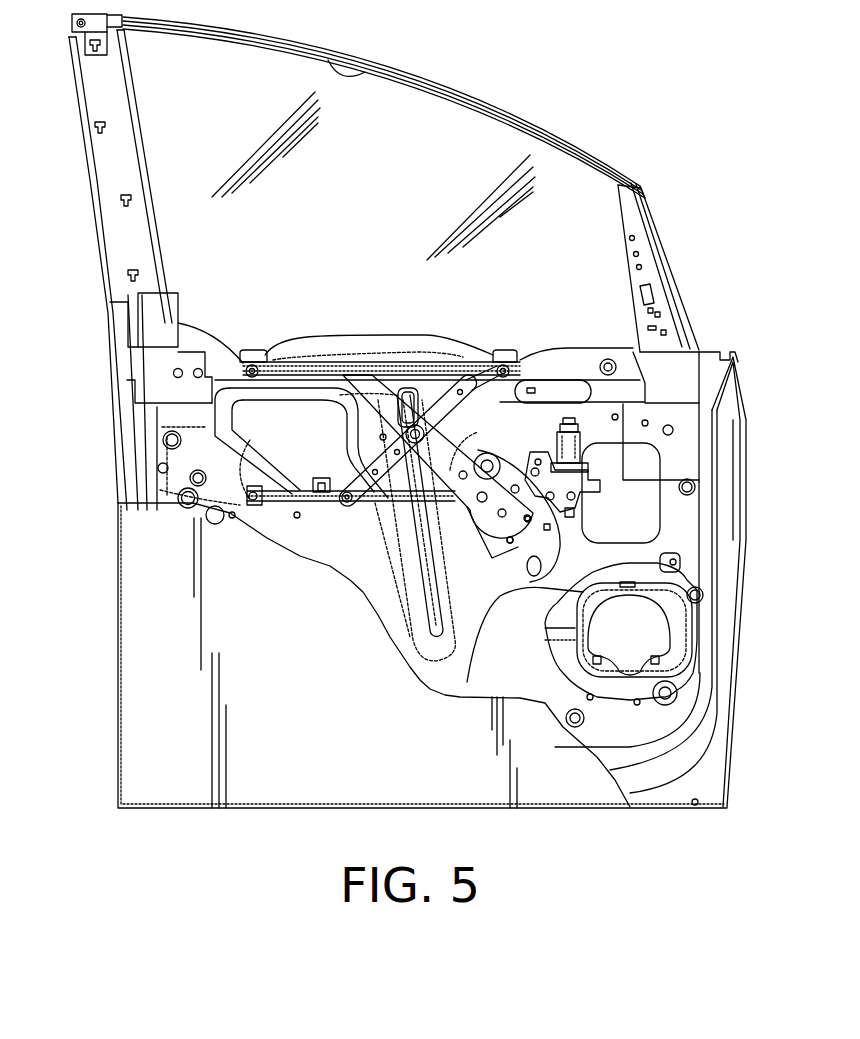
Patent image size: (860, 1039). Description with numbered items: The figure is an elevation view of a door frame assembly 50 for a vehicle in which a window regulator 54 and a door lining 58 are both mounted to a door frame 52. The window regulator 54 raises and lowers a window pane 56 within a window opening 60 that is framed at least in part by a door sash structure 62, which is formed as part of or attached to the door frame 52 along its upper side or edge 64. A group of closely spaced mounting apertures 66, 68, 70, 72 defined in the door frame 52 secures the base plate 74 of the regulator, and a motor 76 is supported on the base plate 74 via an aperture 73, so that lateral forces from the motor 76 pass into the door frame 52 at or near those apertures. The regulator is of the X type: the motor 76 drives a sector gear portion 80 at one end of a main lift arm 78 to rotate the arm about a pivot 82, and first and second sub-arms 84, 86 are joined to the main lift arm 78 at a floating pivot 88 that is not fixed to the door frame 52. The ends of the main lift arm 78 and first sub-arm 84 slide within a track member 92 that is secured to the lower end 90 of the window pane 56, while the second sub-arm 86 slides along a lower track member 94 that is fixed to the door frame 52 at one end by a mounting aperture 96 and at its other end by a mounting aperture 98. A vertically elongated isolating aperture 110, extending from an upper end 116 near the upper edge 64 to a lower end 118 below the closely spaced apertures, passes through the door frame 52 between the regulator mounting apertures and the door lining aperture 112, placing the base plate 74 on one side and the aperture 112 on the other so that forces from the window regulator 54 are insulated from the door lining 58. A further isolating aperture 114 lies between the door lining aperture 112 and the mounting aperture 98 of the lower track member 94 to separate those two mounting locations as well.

The door frame assembly 50 is at (90, 594).
The door frame 52 is at (727, 685).
The window regulator 54 is at (558, 550).
The window pane 56 is at (478, 132).
The door lining 58 is at (290, 792).
The window opening 60 is at (363, 72).
The door sash structure 62 is at (648, 233).
The upper side or edge of the door frame 64 is at (703, 392).
The mounting aperture 66 is at (535, 387).
The mounting aperture 68 is at (483, 553).
The mounting aperture 70 is at (578, 425).
The mounting aperture 72 is at (552, 528).
The aperture 73 is at (578, 470).
The base plate 74 is at (556, 500).
The motor 76 is at (583, 452).
The main lift arm 78 is at (482, 510).
The sector gear portion 80 is at (513, 578).
The pivot 82 is at (493, 350).
The first sub-arm 84 is at (460, 380).
The second sub-arm 86 is at (365, 445).
The floating pivot 88 is at (372, 374).
The lower end of the window pane 90 is at (240, 358).
The track member 92 is at (288, 375).
The lower track member 94 is at (312, 500).
The mounting aperture 96 is at (382, 508).
The mounting aperture 98 is at (236, 524).
The isolating aperture 110 is at (427, 572).
The door lining aperture 112 is at (262, 528).
The isolating aperture 114 is at (302, 392).
The upper end of the isolating aperture 116 is at (408, 388).
The lower end of the isolating aperture 118 is at (412, 695).